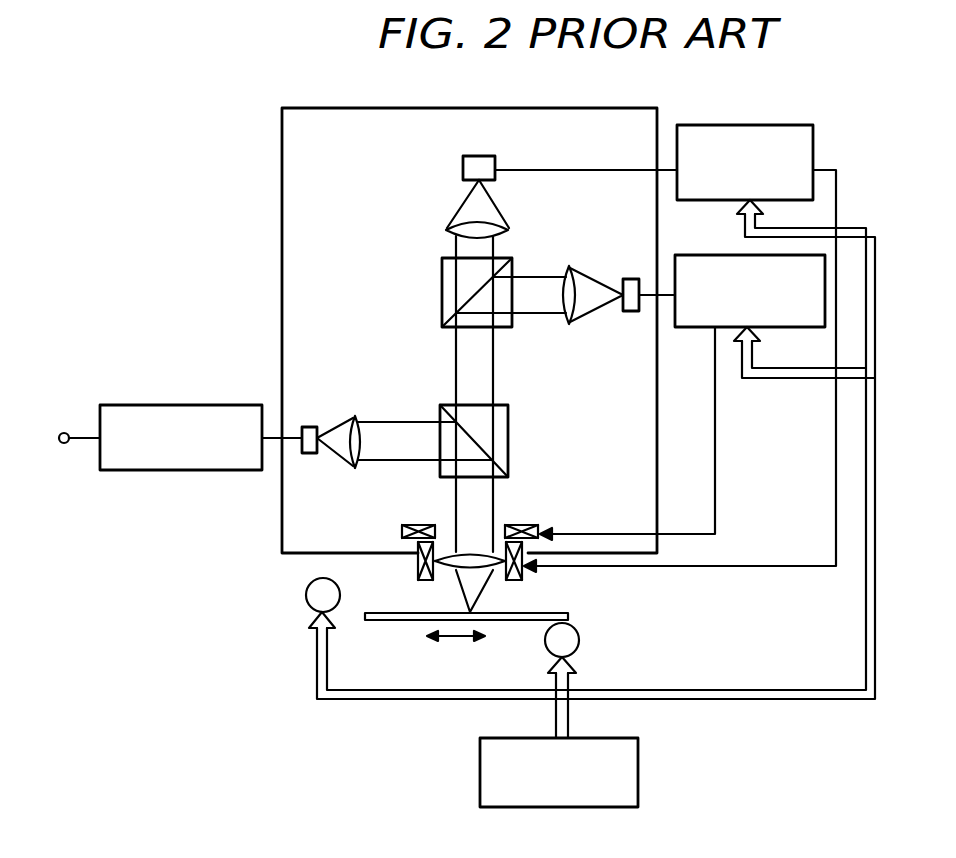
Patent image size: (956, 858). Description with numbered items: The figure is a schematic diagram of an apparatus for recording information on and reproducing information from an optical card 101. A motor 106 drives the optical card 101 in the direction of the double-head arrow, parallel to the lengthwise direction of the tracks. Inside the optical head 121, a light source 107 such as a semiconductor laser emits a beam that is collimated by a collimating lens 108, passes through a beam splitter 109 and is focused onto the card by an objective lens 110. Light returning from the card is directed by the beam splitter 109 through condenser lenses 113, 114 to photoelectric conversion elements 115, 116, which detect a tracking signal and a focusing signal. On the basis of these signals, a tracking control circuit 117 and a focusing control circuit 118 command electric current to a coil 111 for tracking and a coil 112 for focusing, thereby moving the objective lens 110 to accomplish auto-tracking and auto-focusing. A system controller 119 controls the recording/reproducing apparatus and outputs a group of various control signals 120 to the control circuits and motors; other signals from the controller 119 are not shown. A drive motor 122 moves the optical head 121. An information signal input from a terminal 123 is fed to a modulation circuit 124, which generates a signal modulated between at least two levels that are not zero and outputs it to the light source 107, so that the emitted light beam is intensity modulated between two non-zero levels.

The optical card 101 is at (383, 621).
The motor 106 is at (580, 640).
The light source 107 is at (310, 453).
The collimating lens 108 is at (362, 445).
The beam splitter 109 is at (442, 290).
The objective lens 110 is at (482, 547).
The coil for tracking 111 is at (535, 525).
The coil for focusing 112 is at (525, 575).
The condenser lens 113 is at (566, 266).
The condenser lens 114 is at (446, 228).
The photoelectric conversion element 115 is at (625, 279).
The photoelectric conversion element 116 is at (493, 157).
The tracking control circuit 117 is at (700, 255).
The focusing control circuit 118 is at (752, 125).
The system controller 119 is at (638, 782).
The group of control signals 120 is at (712, 690).
The optical head 121 is at (350, 107).
The drive motor 122 is at (340, 596).
The terminal 123 is at (64, 433).
The modulation circuit 124 is at (226, 405).